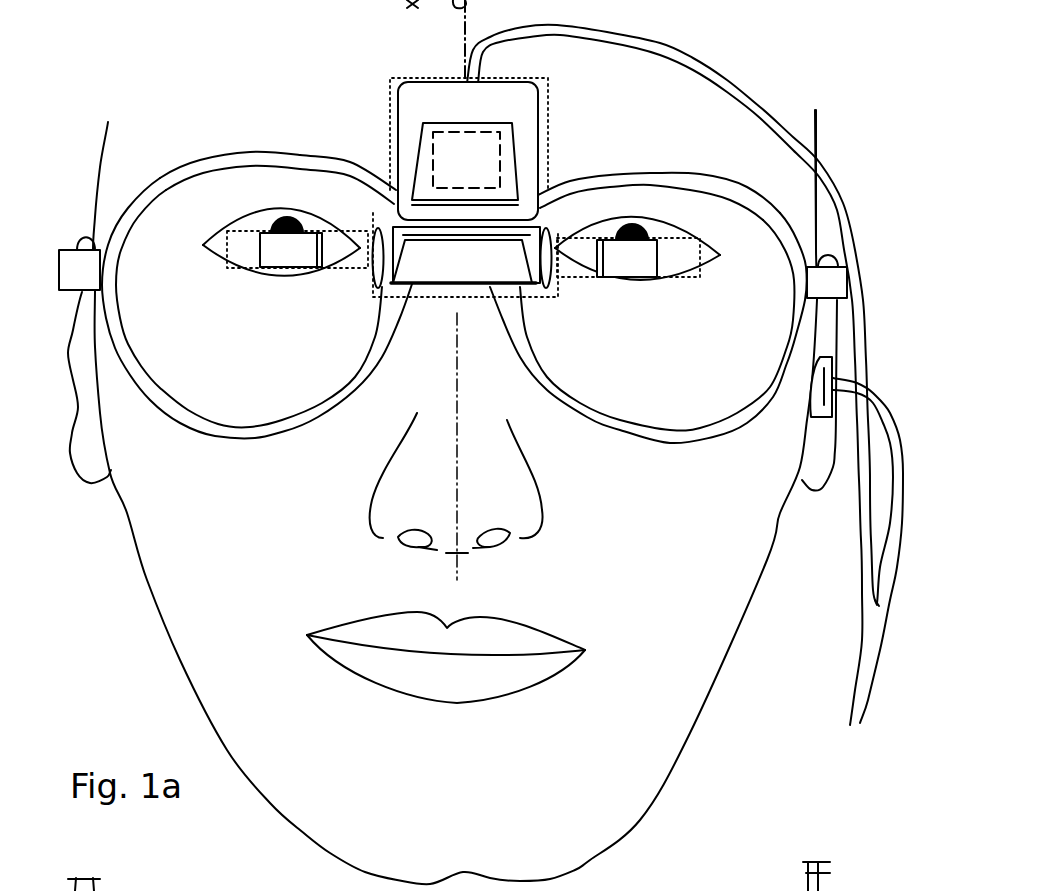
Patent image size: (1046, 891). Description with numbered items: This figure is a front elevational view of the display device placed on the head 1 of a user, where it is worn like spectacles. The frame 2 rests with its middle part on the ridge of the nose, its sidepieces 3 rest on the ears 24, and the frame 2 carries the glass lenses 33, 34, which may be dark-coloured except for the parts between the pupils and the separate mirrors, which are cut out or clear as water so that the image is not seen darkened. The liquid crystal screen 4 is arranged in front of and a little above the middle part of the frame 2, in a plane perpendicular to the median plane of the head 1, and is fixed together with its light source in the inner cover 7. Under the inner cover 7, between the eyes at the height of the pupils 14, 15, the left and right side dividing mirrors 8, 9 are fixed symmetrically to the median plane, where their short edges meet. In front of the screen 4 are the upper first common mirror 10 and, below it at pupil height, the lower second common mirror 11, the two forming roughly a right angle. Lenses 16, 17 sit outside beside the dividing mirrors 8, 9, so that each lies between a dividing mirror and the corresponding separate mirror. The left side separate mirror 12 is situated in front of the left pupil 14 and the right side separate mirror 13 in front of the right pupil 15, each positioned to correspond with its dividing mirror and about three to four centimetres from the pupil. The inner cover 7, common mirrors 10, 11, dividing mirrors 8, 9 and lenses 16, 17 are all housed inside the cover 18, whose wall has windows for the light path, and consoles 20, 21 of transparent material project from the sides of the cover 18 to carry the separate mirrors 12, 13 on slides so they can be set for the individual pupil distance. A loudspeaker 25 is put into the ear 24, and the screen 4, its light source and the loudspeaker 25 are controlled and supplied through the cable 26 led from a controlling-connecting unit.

The head 1 is at (175, 668).
The frame 2 is at (175, 163).
The sidepieces 3 is at (822, 873).
The screen 4 is at (443, 130).
The inner cover 7 is at (398, 105).
The left side dividing mirror 8 is at (397, 215).
The right side dividing mirror 9 is at (548, 200).
The first common mirror 10 is at (400, 105).
The second common mirror 11 is at (450, 284).
The left side separate mirror 12 is at (313, 250).
The right side separate mirror 13 is at (645, 257).
The left pupil 14 is at (285, 226).
The right pupil 15 is at (632, 225).
The lens 16 is at (378, 228).
The lens 17 is at (548, 242).
The cover 18 is at (548, 135).
The left side console 20 is at (233, 233).
The right side console 21 is at (677, 240).
The ears 24 is at (83, 490).
The loudspeaker 25 is at (813, 390).
The cable 26 is at (860, 637).
The glass lens 33 is at (147, 233).
The glass lens 34 is at (758, 255).